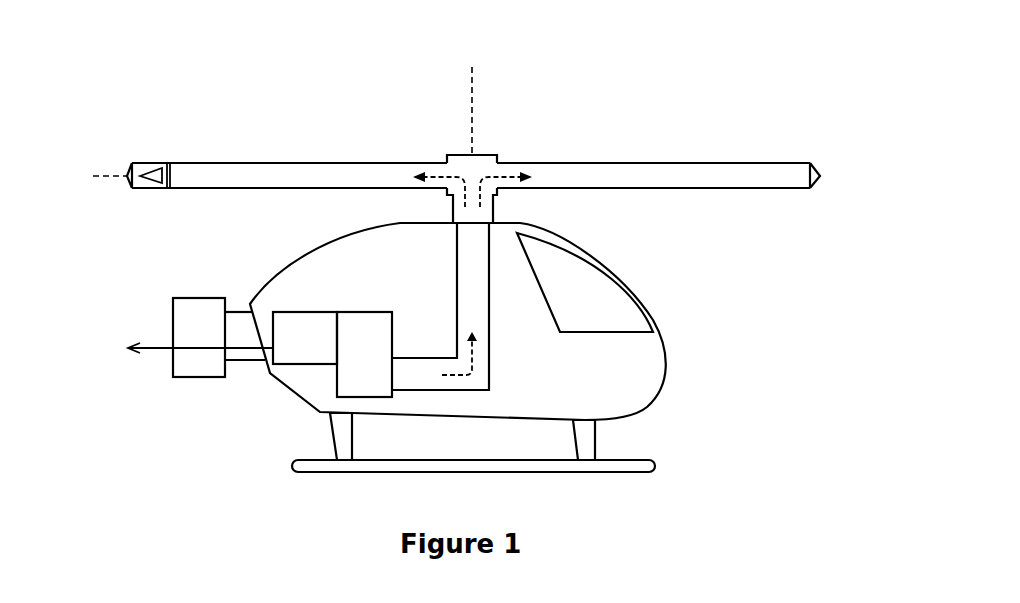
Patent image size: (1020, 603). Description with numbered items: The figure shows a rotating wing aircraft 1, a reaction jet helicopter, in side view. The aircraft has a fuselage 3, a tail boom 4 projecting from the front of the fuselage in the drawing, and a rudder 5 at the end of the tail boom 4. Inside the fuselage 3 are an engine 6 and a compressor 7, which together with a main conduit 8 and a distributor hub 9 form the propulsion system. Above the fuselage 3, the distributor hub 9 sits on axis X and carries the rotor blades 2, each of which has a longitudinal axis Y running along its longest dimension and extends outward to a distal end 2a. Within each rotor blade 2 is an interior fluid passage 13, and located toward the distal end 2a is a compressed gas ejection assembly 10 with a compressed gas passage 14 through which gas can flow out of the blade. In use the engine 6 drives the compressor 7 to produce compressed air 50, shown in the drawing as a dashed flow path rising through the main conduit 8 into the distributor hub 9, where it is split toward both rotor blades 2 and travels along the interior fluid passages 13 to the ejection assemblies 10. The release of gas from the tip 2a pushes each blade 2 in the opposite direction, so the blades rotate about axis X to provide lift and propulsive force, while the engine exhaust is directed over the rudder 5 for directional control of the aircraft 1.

The rotating wing aircraft 1 is at (469, 246).
The rotor blade 2 is at (345, 163).
The distal end 2a is at (128, 183).
The fuselage 3 is at (670, 343).
The tail boom 4 is at (237, 310).
The rudder 5 is at (175, 378).
The engine 6 is at (305, 338).
The compressor 7 is at (364, 354).
The main conduit 8 is at (490, 357).
The distributor hub 9 is at (475, 155).
The compressed gas ejection assembly 10 is at (148, 163).
The interior fluid passage 13 is at (743, 178).
The compressed gas passage 14 is at (155, 185).
The compressed air 50 is at (445, 360).